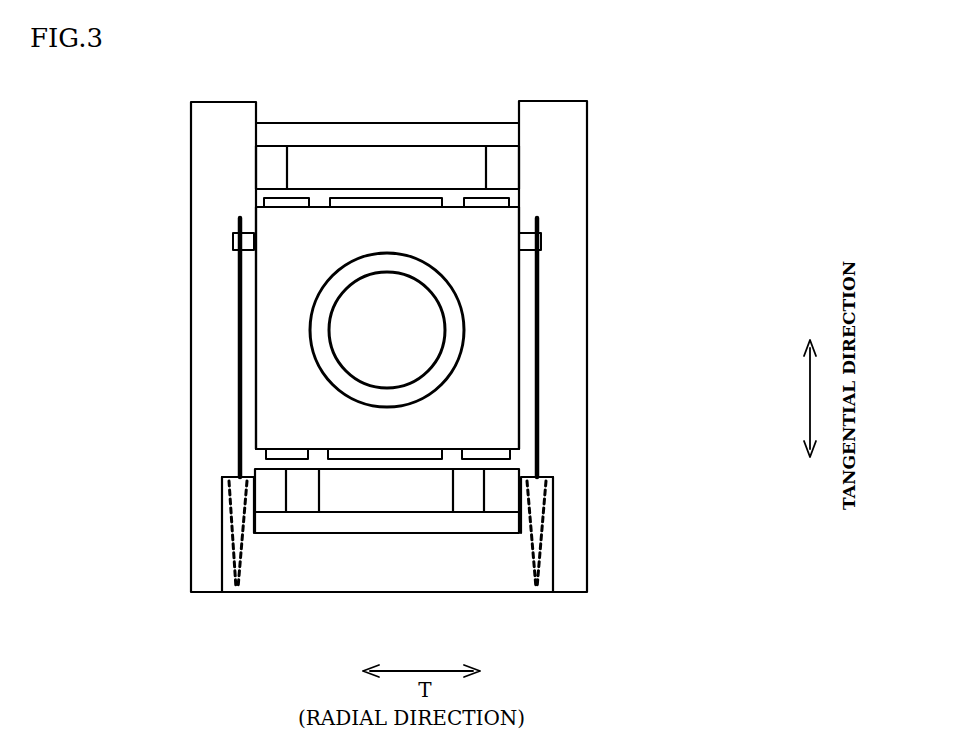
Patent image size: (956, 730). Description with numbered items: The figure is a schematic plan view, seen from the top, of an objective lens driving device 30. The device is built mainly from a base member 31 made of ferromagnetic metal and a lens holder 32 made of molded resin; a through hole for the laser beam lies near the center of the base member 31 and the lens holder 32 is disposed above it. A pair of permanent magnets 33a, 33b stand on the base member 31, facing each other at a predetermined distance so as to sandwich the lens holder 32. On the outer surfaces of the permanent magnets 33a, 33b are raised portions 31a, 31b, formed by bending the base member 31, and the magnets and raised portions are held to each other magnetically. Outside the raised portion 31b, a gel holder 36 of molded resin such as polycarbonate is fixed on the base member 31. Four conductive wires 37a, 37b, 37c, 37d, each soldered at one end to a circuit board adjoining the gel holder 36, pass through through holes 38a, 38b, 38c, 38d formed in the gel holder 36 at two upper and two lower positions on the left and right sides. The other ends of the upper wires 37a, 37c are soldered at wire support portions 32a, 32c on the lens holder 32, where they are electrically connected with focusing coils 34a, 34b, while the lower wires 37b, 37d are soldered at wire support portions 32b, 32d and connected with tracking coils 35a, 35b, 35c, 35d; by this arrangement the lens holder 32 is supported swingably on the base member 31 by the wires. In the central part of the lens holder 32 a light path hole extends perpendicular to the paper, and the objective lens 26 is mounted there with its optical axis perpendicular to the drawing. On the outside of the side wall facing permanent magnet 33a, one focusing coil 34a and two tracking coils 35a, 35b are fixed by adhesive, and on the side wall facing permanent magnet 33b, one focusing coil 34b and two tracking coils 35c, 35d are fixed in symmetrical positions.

The objective lens driving device 30 is at (403, 349).
The base member 31 is at (212, 183).
The raised portion 31a is at (417, 137).
The raised portion 31b is at (408, 523).
The lens holder 32 is at (507, 313).
The wire support portion 32a is at (164, 249).
The wire support portion 32b is at (233, 240).
The wire support portion 32c is at (646, 231).
The wire support portion 32d is at (541, 240).
The permanent magnet 33a is at (330, 175).
The permanent magnet 33b is at (343, 498).
The focusing coil 34a is at (398, 210).
The focusing coil 34b is at (357, 453).
The tracking coil 35a is at (297, 213).
The tracking coil 35b is at (497, 205).
The tracking coil 35c is at (300, 453).
The tracking coil 35d is at (480, 448).
The gel holder 36 is at (486, 583).
The wire 37a is at (145, 347).
The wire 37b is at (240, 358).
The wire 37c is at (648, 347).
The wire 37d is at (538, 385).
The through hole 38a is at (143, 529).
The through hole 38b is at (232, 518).
The through hole 38c is at (647, 532).
The through hole 38d is at (647, 532).
The objective lens 26 is at (448, 333).